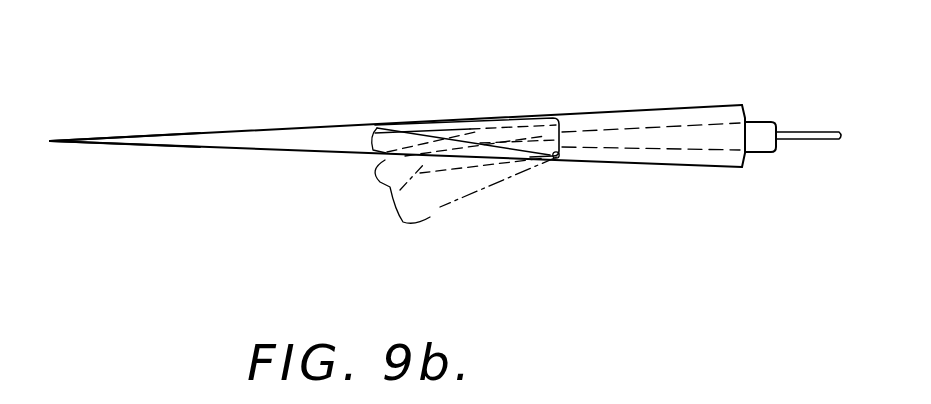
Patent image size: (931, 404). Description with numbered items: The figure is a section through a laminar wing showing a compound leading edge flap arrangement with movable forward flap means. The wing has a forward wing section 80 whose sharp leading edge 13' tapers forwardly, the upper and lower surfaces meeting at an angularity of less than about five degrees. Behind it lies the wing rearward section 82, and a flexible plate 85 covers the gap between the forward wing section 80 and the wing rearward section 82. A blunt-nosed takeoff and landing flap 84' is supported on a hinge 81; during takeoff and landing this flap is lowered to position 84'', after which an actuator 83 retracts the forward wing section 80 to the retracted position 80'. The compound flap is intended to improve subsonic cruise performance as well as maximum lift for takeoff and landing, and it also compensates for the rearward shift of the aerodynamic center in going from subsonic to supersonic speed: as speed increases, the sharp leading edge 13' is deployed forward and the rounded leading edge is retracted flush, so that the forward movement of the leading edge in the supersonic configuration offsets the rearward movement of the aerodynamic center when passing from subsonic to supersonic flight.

The forward wing section 80 is at (392, 175).
The leading edge 13' is at (125, 84).
The wing rearward section 82 is at (688, 107).
The actuator 83 is at (779, 153).
The retracted position of forward wing section 80' is at (804, 80).
The flexible plate 85 is at (428, 122).
The hinge 81 is at (571, 158).
The blunt-nosed takeoff and landing flap 84' is at (404, 185).
The lowered position of blunt-nosed flap 84'' is at (466, 211).